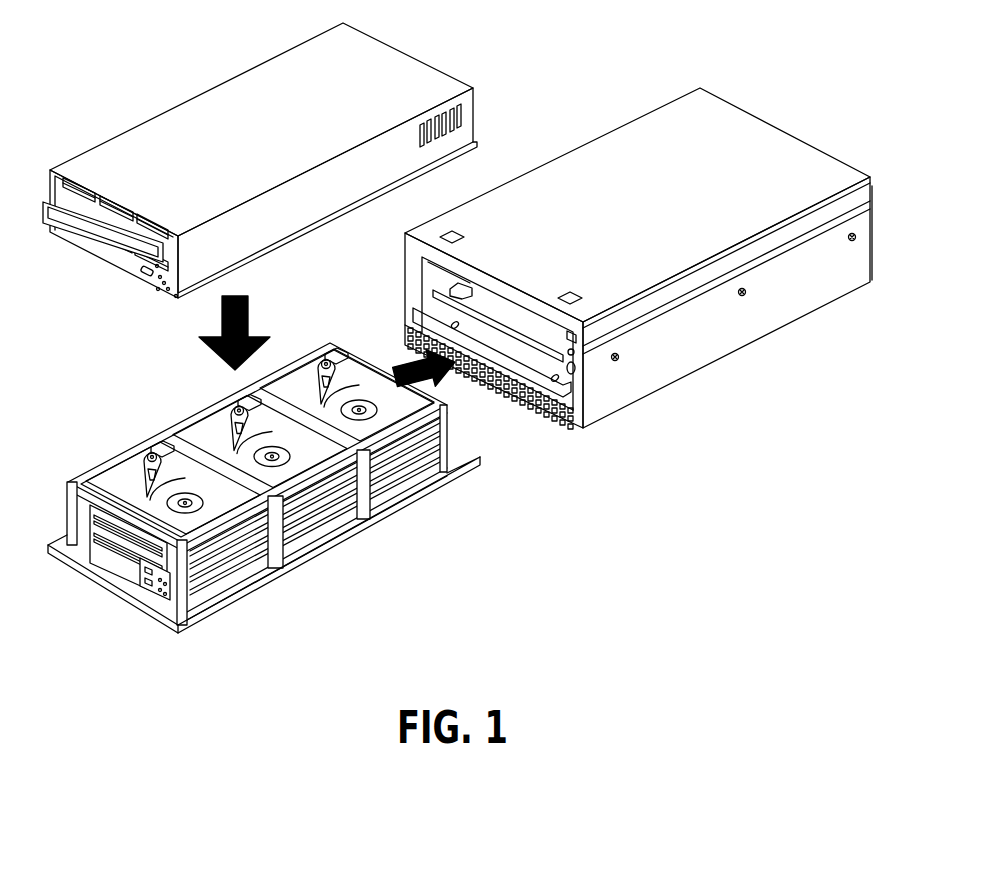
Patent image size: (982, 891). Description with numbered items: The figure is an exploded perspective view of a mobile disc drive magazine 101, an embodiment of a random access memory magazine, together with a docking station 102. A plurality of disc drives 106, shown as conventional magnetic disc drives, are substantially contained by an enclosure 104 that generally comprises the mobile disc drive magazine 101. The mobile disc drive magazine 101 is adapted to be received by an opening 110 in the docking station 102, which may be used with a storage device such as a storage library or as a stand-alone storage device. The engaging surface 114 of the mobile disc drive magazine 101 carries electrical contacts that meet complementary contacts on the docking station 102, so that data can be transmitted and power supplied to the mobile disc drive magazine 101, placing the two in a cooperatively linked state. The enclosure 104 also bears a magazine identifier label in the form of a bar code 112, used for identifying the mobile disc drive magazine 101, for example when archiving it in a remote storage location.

The mobile disc drive magazine 101 is at (147, 440).
The docking station 102 is at (597, 140).
The enclosure 104 is at (210, 90).
The disc drives 106 is at (130, 463).
The opening 110 is at (480, 312).
The bar code 112 is at (462, 118).
The engaging surface 114 is at (443, 442).